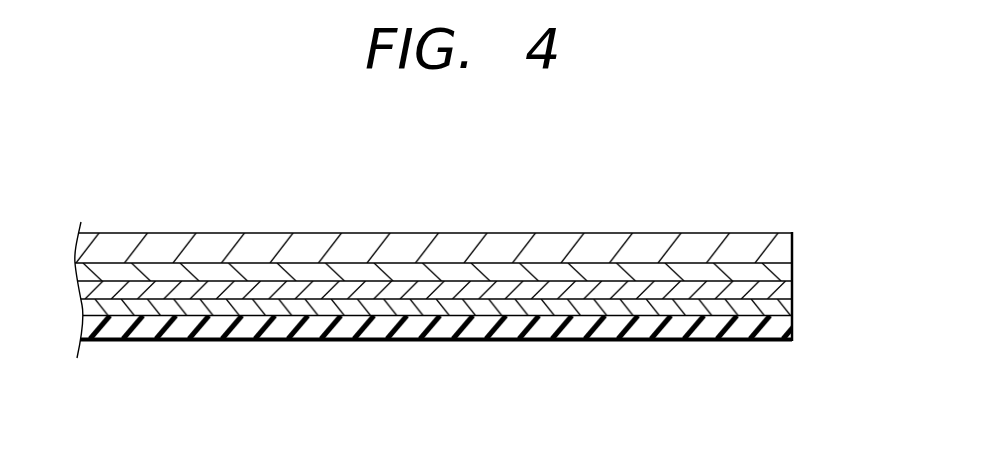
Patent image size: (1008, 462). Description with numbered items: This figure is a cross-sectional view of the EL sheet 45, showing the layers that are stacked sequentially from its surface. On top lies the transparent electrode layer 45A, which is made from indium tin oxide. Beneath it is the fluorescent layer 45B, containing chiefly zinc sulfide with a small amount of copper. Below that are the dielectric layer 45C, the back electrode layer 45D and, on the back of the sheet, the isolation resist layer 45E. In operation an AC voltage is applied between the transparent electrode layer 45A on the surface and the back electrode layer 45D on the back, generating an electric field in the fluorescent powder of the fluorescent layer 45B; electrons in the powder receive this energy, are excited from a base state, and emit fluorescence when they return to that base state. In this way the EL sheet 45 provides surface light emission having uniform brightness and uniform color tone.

The EL sheet 45 is at (490, 258).
The transparent electrode layer 45A is at (430, 248).
The fluorescent layer 45B is at (430, 272).
The dielectric layer 45C is at (430, 290).
The back electrode layer 45D is at (430, 307).
The isolation resist layer 45E is at (430, 328).